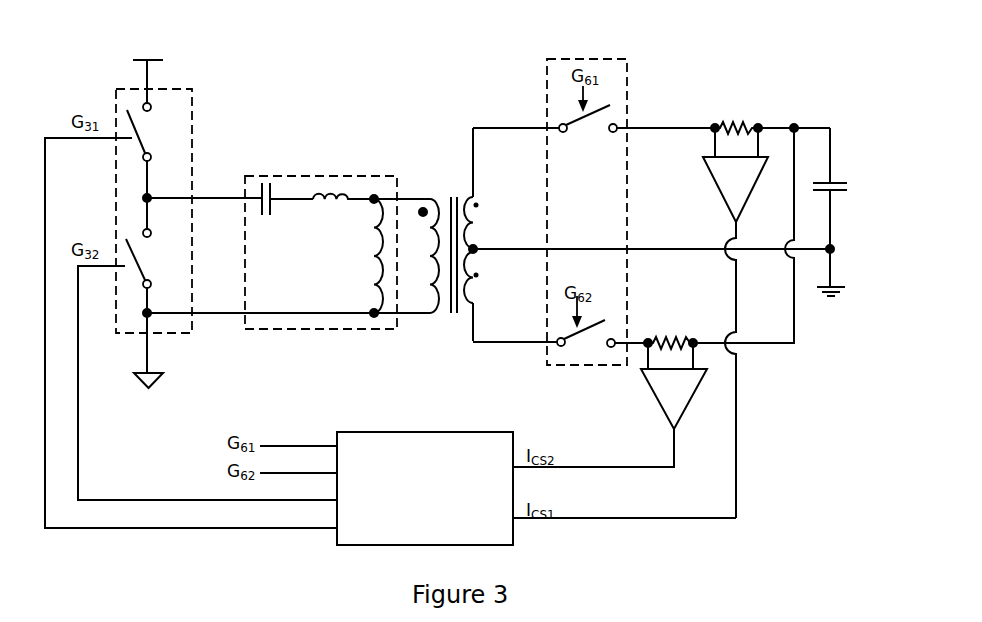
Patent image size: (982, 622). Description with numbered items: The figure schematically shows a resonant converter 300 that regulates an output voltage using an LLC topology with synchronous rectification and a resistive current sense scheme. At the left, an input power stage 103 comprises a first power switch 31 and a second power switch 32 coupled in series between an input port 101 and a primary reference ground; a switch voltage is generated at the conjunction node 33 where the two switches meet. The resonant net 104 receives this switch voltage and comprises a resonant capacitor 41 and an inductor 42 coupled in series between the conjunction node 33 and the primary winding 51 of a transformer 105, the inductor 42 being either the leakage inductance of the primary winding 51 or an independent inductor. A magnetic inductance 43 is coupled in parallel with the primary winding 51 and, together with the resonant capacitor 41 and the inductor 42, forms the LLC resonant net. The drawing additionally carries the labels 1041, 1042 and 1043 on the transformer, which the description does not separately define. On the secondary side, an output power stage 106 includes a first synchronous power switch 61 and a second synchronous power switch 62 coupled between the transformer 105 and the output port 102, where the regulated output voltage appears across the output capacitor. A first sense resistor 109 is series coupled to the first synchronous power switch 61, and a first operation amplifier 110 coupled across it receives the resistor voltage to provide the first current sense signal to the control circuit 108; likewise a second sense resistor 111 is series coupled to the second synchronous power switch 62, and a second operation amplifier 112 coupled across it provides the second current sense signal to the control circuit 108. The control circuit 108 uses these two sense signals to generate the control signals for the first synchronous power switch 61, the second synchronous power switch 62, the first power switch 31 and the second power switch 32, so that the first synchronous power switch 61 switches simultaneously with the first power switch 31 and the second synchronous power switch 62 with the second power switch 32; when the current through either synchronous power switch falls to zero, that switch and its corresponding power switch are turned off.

The input port 101 is at (149, 67).
The input power stage 103 is at (196, 104).
The first power switch 31 is at (152, 150).
The second power switch 32 is at (151, 293).
The conjunction node 33 is at (151, 203).
The resonant net 104 is at (327, 175).
The resonant capacitor 41 is at (285, 211).
The inductor 42 is at (371, 211).
The magnetic inductance 43 is at (364, 256).
The primary winding 51 is at (423, 256).
The transformer 105 is at (456, 194).
The transformer core 1041 is at (431, 270).
The first secondary winding 1042 is at (493, 222).
The second secondary winding 1043 is at (493, 282).
The output power stage 106 is at (632, 94).
The first synchronous power switch 61 is at (637, 127).
The second synchronous power switch 62 is at (602, 341).
The first sense resistor 109 is at (770, 118).
The first operation amplifier 110 is at (735, 323).
The second sense resistor 111 is at (670, 333).
The second operation amplifier 112 is at (674, 386).
The output port 102 is at (770, 223).
The control circuit 108 is at (425, 488).
The resonant converter 300 is at (800, 68).